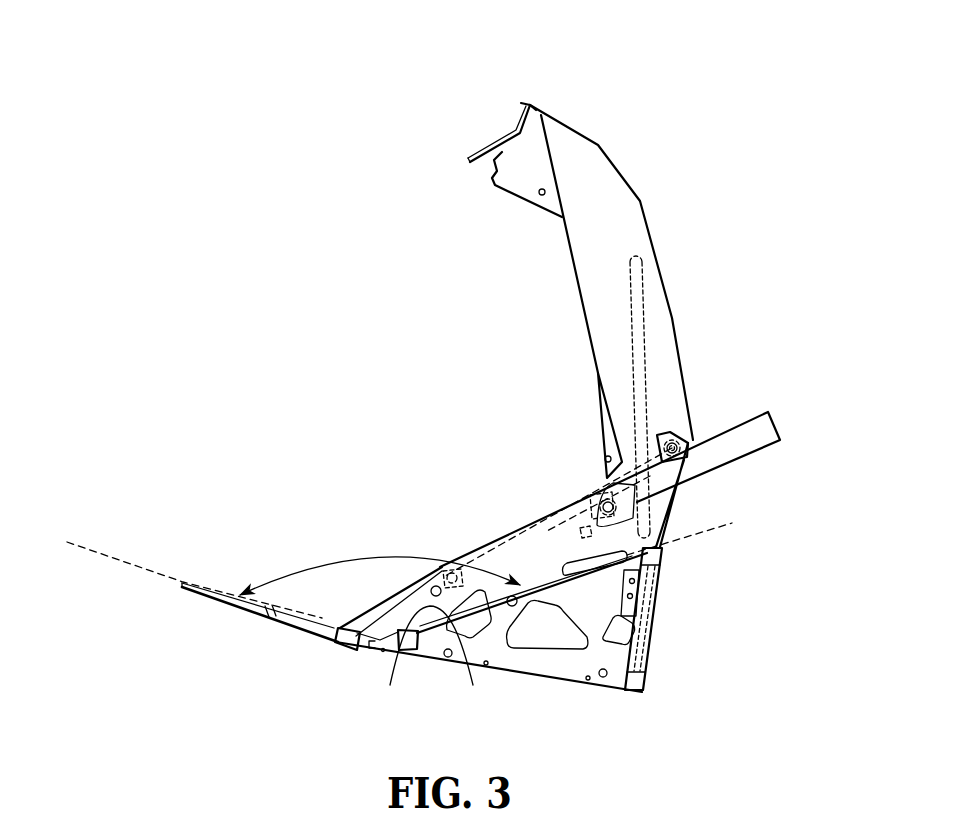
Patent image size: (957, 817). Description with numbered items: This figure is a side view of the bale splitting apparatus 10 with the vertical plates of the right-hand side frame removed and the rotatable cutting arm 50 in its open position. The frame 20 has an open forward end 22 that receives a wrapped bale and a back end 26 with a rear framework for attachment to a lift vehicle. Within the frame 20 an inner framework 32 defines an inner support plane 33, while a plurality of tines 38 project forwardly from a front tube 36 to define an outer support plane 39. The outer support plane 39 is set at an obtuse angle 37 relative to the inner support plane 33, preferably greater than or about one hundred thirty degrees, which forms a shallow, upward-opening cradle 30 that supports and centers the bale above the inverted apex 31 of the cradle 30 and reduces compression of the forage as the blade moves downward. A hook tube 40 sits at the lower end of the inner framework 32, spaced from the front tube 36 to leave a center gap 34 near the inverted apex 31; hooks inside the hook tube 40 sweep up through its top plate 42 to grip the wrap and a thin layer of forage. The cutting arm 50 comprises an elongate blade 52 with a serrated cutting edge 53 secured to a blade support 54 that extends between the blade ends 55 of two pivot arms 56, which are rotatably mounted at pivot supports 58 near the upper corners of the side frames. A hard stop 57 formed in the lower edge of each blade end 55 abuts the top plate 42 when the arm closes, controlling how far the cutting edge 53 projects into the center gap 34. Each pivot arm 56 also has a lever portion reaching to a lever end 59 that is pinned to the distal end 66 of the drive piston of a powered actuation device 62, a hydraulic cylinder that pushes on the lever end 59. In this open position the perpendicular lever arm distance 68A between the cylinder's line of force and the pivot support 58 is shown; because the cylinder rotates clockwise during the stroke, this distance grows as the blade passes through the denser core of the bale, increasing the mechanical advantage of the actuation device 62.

The bale splitting apparatus 10 is at (282, 272).
The frame 20 is at (493, 430).
The forward end 22 is at (188, 488).
The back end 26 is at (690, 647).
The cradle 30 is at (333, 508).
The inverted apex 31 is at (365, 688).
The inner framework 32 is at (500, 608).
The inner support plane 33 is at (723, 525).
The center gap 34 is at (390, 650).
The front tube 36 is at (350, 643).
The obtuse angle 37 is at (388, 558).
The tines 38 is at (253, 607).
The outer support plane 39 is at (113, 557).
The hook tube 40 is at (408, 645).
The top plate 42 is at (497, 607).
The rotatable cutting arm 50 is at (690, 267).
The elongate blade 52 is at (507, 133).
The serrated cutting edge 53 is at (477, 160).
The blade support 54 is at (520, 90).
The blade ends 55 is at (585, 108).
The pivot arms 56 is at (597, 260).
The hard stop 57 is at (498, 183).
The pivot supports 58 is at (675, 437).
The lever ends 59 is at (605, 478).
The powered actuation device 62 is at (543, 565).
The distal ends of the drive pistons 66 is at (604, 505).
The lever arm distance 68A is at (776, 464).